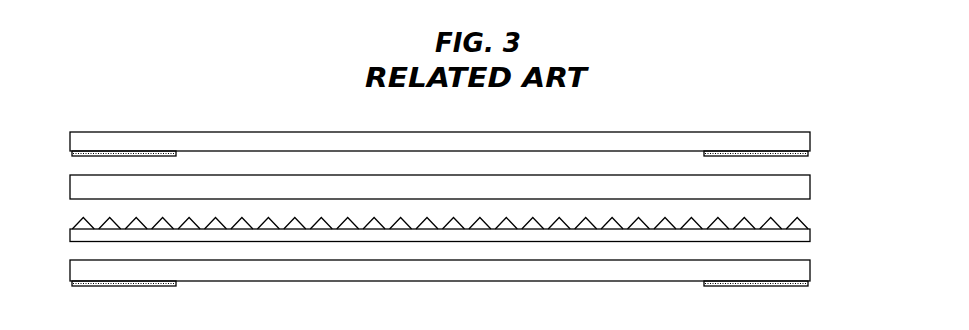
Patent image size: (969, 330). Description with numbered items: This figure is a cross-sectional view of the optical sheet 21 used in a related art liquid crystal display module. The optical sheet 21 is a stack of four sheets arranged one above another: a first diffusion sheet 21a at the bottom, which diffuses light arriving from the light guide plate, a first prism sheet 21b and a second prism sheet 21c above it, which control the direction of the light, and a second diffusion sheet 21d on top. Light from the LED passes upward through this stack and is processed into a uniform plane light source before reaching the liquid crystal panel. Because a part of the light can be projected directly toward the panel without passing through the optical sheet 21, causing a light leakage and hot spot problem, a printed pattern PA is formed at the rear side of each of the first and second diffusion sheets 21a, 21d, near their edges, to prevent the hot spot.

The optical sheet 21 is at (500, 207).
The first diffusion sheet 21a is at (475, 271).
The first prism sheet 21b is at (803, 234).
The second prism sheet 21c is at (803, 191).
The second diffusion sheet 21d is at (803, 141).
The printed pattern PA is at (70, 157).